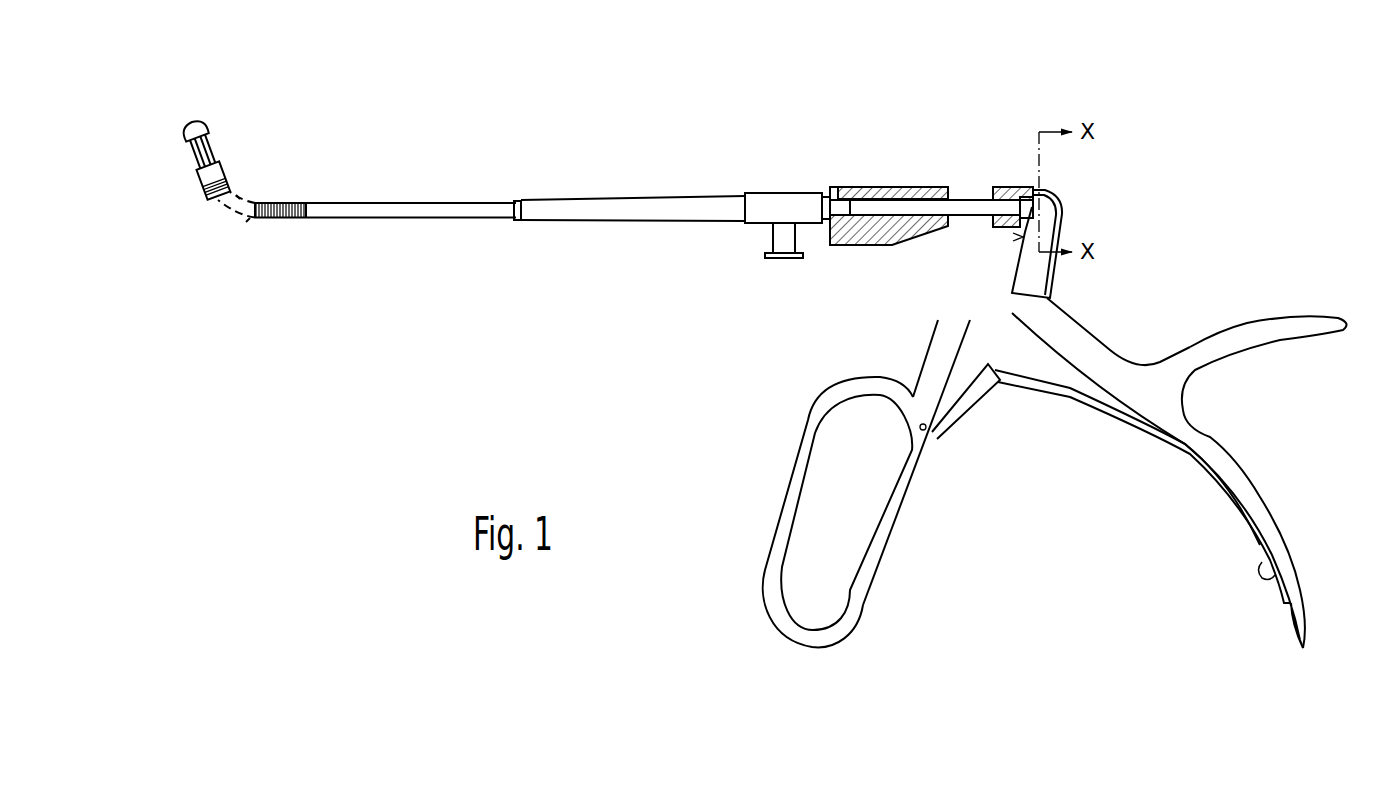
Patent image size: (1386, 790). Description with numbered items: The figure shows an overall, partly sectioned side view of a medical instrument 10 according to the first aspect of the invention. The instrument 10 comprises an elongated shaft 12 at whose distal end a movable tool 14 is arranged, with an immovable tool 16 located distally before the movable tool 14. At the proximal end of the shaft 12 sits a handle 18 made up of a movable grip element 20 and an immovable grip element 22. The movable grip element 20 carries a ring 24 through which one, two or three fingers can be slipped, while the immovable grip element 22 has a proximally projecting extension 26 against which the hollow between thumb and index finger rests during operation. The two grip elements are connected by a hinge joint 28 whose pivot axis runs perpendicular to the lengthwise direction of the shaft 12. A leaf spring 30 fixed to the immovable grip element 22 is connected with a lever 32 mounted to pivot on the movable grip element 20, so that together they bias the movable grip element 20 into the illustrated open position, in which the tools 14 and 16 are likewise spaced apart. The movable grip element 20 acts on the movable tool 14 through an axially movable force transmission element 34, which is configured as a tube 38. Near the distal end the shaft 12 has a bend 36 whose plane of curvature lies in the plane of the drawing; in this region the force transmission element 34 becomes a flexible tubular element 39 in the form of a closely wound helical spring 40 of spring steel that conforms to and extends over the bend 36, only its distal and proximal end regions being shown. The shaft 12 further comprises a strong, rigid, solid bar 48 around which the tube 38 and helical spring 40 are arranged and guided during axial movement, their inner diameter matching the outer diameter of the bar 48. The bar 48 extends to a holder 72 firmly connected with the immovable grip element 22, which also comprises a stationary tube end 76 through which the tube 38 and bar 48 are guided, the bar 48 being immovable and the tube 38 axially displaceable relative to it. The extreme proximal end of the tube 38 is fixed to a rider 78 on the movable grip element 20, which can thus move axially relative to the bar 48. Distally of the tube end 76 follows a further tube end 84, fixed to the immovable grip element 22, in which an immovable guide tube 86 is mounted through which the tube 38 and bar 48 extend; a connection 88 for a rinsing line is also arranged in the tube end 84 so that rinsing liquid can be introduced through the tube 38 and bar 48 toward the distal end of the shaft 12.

The medical instrument 10 is at (623, 177).
The elongated shaft 12 is at (623, 188).
The movable tool 14 is at (201, 180).
The immovable tool 16 is at (186, 133).
The handle 18 is at (1013, 456).
The movable grip element 20 is at (930, 350).
The immovable grip element 22 is at (1100, 353).
The ring 24 is at (773, 568).
The extension 26 is at (1252, 327).
The hinge joint 28 is at (893, 287).
The leaf spring 30 is at (1078, 400).
The lever 32 is at (973, 395).
The force transmission element 34 is at (660, 147).
The bend 36 is at (265, 140).
The tube 38 is at (455, 219).
The flexible tubular element 39 is at (219, 275).
The helical spring 40 is at (278, 219).
The bar 48 is at (1030, 186).
The holder 72 is at (1045, 230).
The stationary tube end 76 is at (900, 200).
The rider 78 is at (1008, 186).
The tube end 84 is at (848, 187).
The guide tube 86 is at (634, 212).
The connection 88 is at (800, 258).